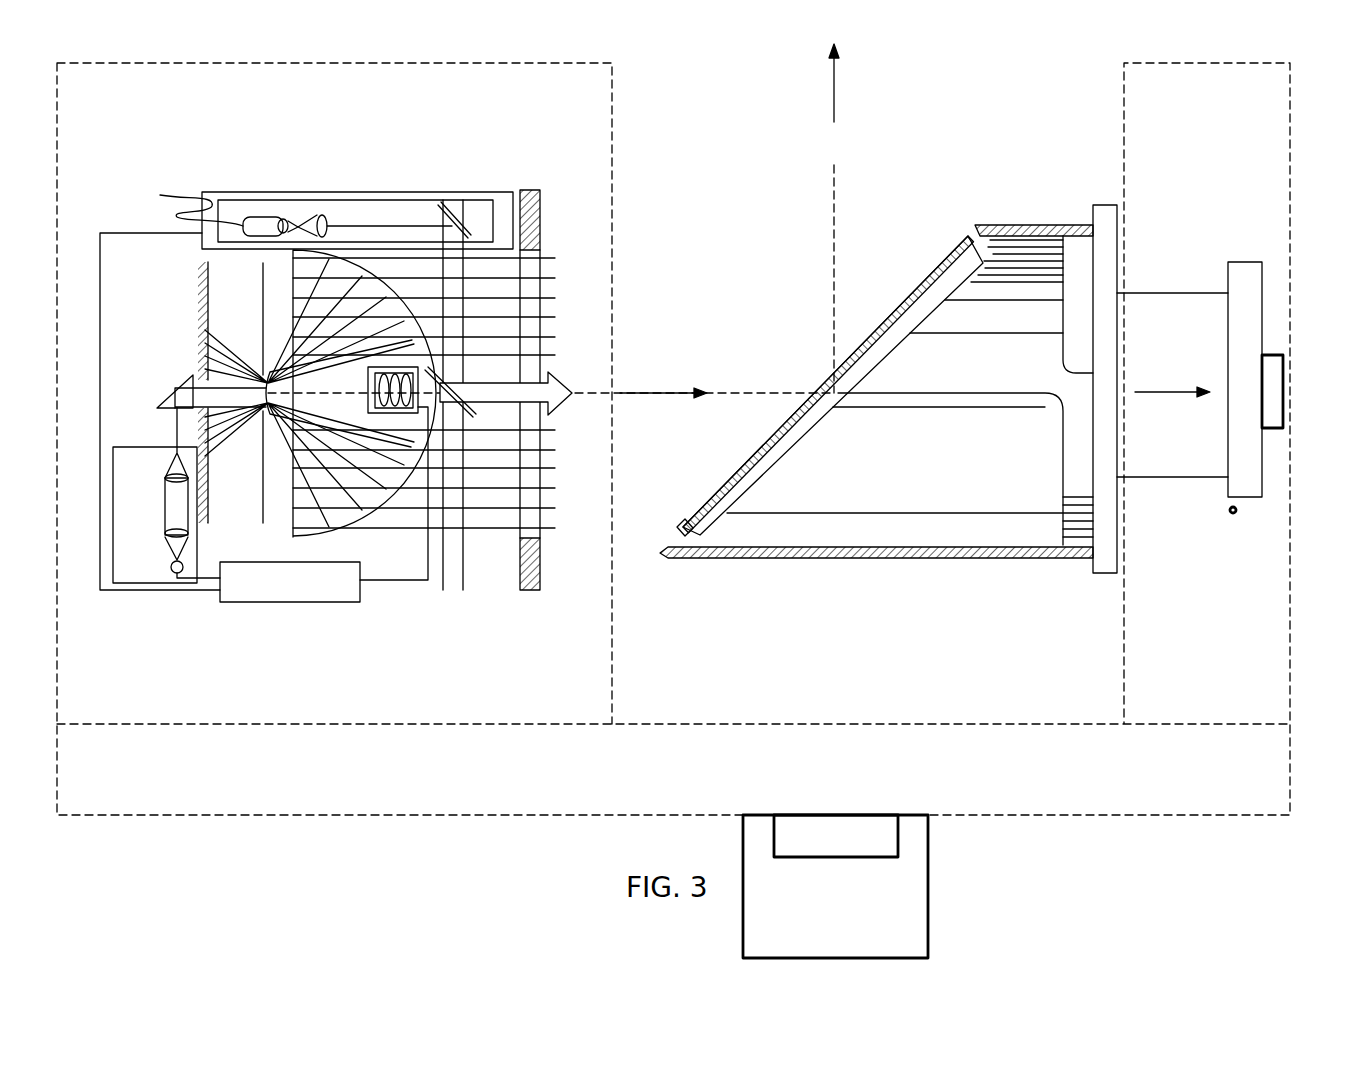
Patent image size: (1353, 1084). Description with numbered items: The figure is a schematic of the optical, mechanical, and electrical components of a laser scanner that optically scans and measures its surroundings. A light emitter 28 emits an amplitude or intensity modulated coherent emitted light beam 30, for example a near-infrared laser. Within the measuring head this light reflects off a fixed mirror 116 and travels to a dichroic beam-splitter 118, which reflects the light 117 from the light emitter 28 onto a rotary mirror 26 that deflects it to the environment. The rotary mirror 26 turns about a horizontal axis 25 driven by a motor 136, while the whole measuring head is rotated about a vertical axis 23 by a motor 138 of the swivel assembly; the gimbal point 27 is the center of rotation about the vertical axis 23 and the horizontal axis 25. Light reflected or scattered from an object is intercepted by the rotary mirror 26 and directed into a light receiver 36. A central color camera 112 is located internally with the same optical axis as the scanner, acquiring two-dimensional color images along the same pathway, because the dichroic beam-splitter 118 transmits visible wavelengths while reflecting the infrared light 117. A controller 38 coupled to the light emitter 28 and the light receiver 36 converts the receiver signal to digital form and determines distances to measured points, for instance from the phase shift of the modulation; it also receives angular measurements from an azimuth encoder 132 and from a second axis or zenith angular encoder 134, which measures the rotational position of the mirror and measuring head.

The vertical axis 23 is at (838, 98).
The horizontal axis 25 is at (1140, 392).
The rotary mirror 26 is at (940, 288).
The gimbal point 27 is at (833, 393).
The light emitter 28 is at (262, 220).
The emitted light beam 30 is at (638, 392).
The light receiver 36 is at (142, 522).
The controller 38 is at (290, 603).
The central color camera 112 is at (392, 410).
The fixed mirror 116 is at (457, 212).
The light 117 is at (453, 290).
The dichroic beam-splitter 118 is at (460, 403).
The azimuth encoder 132 is at (898, 840).
The angular encoder 134 is at (1283, 390).
The motor 136 is at (1252, 500).
The motor 138 is at (928, 940).